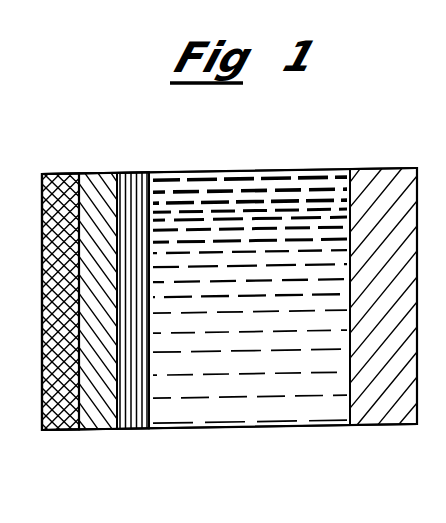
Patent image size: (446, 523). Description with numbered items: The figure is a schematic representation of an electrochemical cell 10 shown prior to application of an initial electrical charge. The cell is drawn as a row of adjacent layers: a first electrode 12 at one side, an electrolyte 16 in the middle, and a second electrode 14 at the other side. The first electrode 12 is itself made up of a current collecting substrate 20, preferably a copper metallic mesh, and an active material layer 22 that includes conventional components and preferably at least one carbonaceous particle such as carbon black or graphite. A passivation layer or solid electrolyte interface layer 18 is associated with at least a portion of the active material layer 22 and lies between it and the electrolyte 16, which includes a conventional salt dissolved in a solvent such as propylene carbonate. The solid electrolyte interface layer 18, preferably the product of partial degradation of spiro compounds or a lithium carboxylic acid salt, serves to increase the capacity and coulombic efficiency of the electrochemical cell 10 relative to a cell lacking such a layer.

The electrochemical cell 10 is at (306, 138).
The first electrode 12 is at (118, 436).
The second electrode 14 is at (380, 168).
The electrolyte 16 is at (223, 171).
The solid electrolyte interface layer 18 is at (140, 173).
The current collecting substrate 20 is at (66, 173).
The active material layer 22 is at (102, 173).